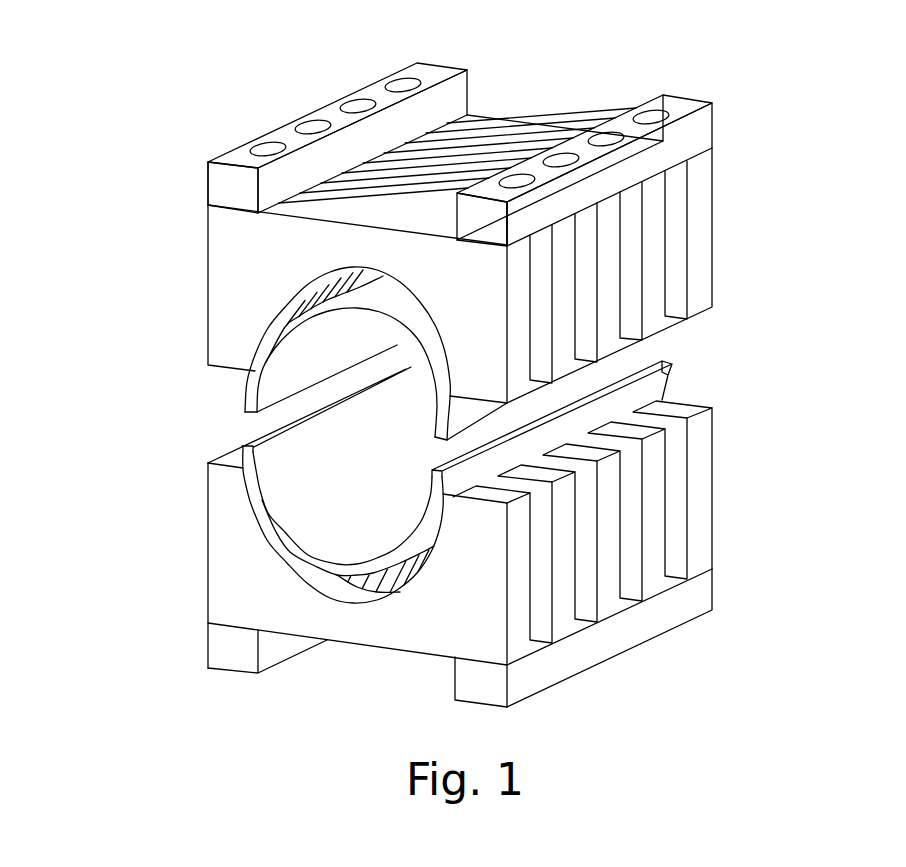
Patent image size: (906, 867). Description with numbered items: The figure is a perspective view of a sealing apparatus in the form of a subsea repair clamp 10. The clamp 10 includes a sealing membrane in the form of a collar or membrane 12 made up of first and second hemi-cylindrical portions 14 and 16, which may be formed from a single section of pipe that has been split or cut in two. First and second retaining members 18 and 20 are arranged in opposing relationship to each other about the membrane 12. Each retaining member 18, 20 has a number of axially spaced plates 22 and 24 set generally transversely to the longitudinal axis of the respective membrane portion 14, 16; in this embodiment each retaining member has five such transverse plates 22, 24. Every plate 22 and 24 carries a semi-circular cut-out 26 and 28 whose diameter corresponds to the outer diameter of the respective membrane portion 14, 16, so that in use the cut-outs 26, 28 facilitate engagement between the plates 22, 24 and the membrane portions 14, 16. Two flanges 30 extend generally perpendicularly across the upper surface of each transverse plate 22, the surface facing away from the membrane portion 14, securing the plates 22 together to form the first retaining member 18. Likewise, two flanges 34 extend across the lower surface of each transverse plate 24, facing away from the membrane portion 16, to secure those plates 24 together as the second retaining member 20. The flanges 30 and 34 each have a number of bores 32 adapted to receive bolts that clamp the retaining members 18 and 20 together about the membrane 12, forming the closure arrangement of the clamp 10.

The subsea repair clamp 10 is at (88, 268).
The membrane 12 is at (236, 413).
The first hemi-cylindrical portion 14 is at (664, 377).
The second hemi-cylindrical portion 16 is at (258, 388).
The first retaining member 18 is at (148, 143).
The second retaining member 20 is at (181, 589).
The transverse plates 22 is at (704, 271).
The transverse plates 24 is at (705, 485).
The semi-circular cut-out 26 is at (323, 270).
The semi-circular cut-out 28 is at (353, 610).
The flanges 30 is at (416, 70).
The bores 32 is at (310, 125).
The flanges 34 is at (230, 648).